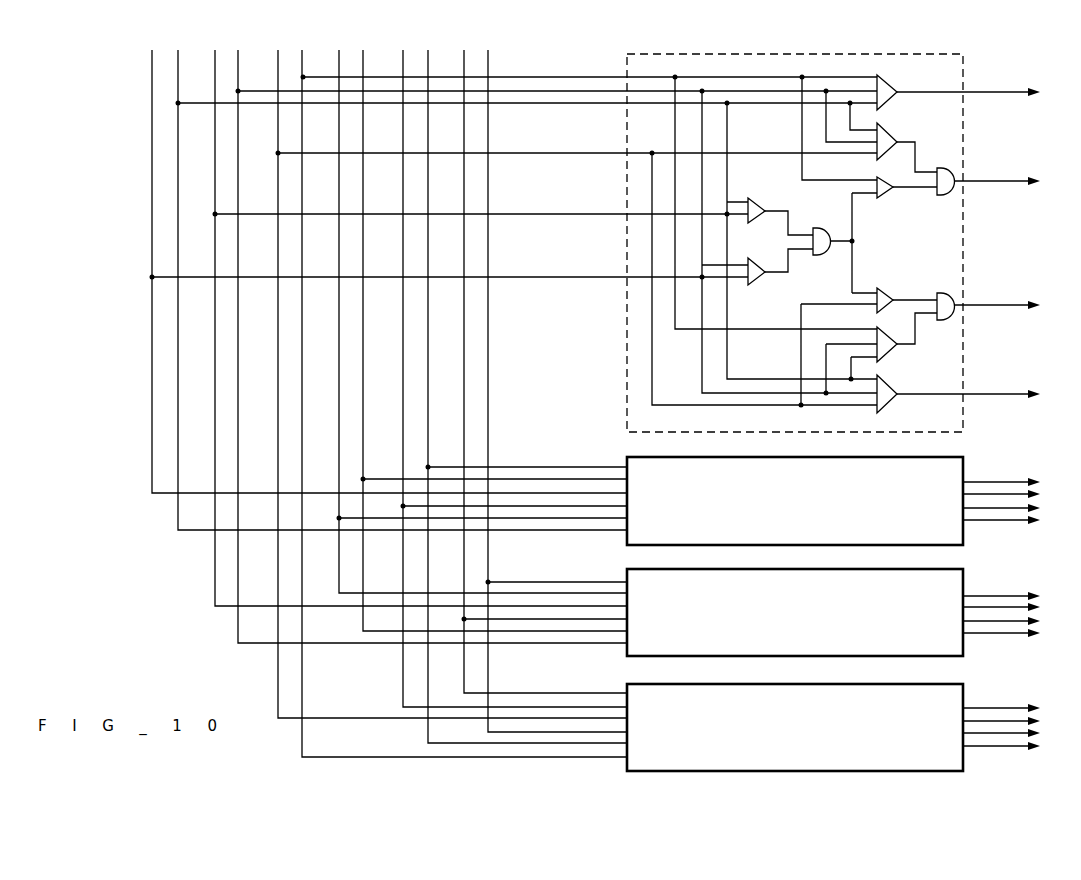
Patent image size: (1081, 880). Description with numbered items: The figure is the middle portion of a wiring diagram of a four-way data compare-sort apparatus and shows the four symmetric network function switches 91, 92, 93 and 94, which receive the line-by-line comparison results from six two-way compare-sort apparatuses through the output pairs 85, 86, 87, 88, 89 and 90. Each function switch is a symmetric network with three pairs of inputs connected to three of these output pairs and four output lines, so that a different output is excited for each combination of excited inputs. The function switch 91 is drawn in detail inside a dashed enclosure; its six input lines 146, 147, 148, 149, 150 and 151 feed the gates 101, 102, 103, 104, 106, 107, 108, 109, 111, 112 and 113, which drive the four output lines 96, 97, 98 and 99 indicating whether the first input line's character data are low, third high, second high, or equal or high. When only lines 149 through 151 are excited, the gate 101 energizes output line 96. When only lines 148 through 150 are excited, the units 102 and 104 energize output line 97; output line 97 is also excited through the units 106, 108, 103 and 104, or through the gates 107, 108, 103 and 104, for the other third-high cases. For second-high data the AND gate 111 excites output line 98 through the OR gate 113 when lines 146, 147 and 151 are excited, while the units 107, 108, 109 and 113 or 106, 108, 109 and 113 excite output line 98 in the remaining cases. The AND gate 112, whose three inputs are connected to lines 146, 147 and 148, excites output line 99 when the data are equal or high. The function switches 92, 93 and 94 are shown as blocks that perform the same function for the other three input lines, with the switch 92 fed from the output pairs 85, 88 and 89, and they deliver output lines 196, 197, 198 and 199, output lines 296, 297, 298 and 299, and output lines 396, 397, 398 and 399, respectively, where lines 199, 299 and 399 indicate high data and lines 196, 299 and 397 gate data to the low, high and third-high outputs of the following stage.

The output pair 85 is at (185, 40).
The output pair 86 is at (246, 40).
The output pair 87 is at (310, 40).
The output pair 88 is at (371, 40).
The output pair 89 is at (435, 40).
The output pair 90 is at (496, 40).
The symmetric network function switch 91 is at (626, 362).
The symmetric network function switch 92 is at (862, 468).
The symmetric network function switch 93 is at (855, 578).
The symmetric network function switch 94 is at (843, 690).
The function switch output line 96 is at (1004, 96).
The function switch output line 97 is at (1002, 186).
The function switch output line 98 is at (1003, 310).
The function switch output line 99 is at (998, 400).
The gate 101 is at (885, 88).
The unit 102 is at (887, 141).
The unit 103 is at (886, 192).
The AND gate 104 is at (952, 167).
The unit 106 is at (758, 216).
The gate 107 is at (756, 268).
The gate 108 is at (818, 235).
The unit 109 is at (886, 304).
The AND gate 111 is at (889, 352).
The AND gate 112 is at (889, 400).
The OR gate 113 is at (955, 284).
The function switch input line 146 is at (577, 277).
The function switch input line 147 is at (577, 214).
The function switch input line 148 is at (585, 152).
The function switch input line 149 is at (541, 104).
The function switch input line 150 is at (539, 91).
The function switch input line 151 is at (598, 77).
The function switch output line 196 is at (1002, 494).
The function switch output line 197 is at (1006, 497).
The function switch output line 198 is at (1000, 508).
The function switch output line 199 is at (1006, 512).
The function switch output line 296 is at (1002, 600).
The function switch output line 297 is at (1006, 609).
The function switch output line 298 is at (1000, 620).
The function switch output line 299 is at (1008, 632).
The function switch output line 396 is at (1006, 721).
The function switch output line 397 is at (1002, 712).
The function switch output line 398 is at (1000, 731).
The function switch output line 399 is at (1008, 744).